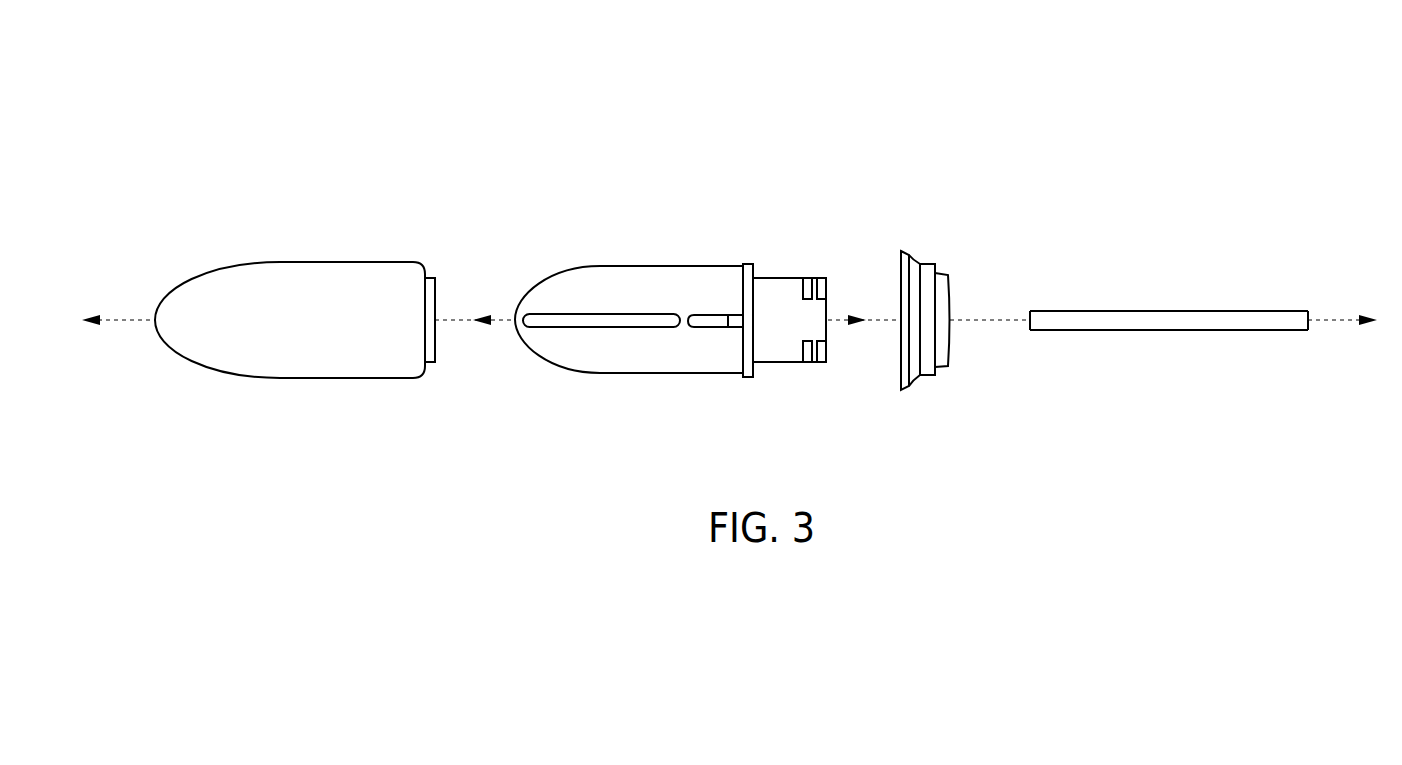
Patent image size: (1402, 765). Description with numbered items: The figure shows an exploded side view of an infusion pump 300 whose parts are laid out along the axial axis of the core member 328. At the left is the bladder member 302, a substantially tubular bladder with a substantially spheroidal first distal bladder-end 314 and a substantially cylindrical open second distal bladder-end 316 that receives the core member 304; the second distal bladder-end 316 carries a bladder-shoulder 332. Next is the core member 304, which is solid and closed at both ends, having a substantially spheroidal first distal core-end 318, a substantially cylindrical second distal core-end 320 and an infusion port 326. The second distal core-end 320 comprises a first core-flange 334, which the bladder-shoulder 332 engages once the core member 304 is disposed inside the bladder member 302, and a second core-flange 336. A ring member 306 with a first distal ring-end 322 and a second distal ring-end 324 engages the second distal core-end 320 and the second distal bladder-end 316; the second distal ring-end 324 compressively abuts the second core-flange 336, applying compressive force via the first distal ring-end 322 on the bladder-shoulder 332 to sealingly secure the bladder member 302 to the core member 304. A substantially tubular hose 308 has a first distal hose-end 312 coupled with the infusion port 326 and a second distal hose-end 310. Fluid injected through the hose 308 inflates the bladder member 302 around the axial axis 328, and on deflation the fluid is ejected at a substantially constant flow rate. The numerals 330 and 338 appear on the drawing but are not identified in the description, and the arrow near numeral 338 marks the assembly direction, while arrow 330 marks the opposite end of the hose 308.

The infusion pump 300 is at (282, 108).
The bladder member 302 is at (318, 262).
The core member 304 is at (676, 266).
The ring member 306 is at (928, 264).
The tubular hose 308 is at (1167, 311).
The second distal hose-end 310 is at (1293, 311).
The first distal hose-end 312 is at (1058, 332).
The first distal bladder-end 314 is at (185, 364).
The second distal bladder-end 316 is at (385, 380).
The first distal core-end 318 is at (540, 358).
The second distal core-end 320 is at (780, 363).
The first distal ring-end 322 is at (905, 252).
The second distal ring-end 324 is at (943, 273).
The infusion port 326 is at (713, 328).
The axial axis of the core member 328 is at (857, 331).
The direction arrow 330 is at (1365, 330).
The bladder-shoulder 332 is at (423, 262).
The first core-flange 334 is at (748, 264).
The second core-flange 336 is at (806, 278).
The end tab 338 is at (822, 278).